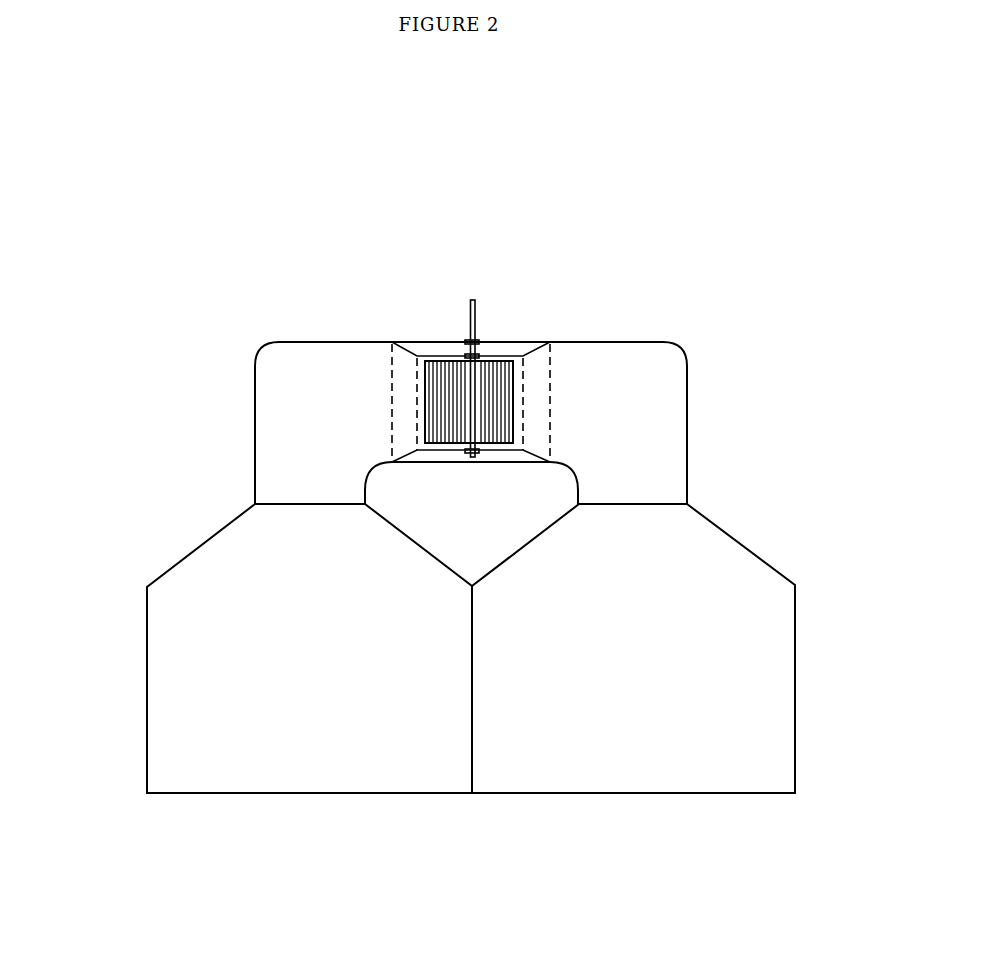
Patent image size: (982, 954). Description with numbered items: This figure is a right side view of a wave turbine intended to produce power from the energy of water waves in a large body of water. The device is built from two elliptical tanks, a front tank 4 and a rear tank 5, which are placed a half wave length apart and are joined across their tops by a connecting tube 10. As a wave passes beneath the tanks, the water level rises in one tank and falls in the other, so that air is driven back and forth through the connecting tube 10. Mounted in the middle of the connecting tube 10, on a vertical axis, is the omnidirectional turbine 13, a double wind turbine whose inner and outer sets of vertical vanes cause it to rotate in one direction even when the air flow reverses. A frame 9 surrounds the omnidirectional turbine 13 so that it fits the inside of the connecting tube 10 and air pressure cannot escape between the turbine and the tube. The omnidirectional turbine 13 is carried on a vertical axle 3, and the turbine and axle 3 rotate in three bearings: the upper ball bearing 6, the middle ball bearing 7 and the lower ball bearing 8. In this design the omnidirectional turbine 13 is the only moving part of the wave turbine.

The axle 3 is at (491, 318).
The front tank 4 is at (133, 690).
The rear tank 5 is at (816, 651).
The upper ball bearing 6 is at (453, 332).
The middle ball bearing 7 is at (495, 352).
The lower ball bearing 8 is at (447, 439).
The frame 9 is at (388, 447).
The connecting tube 10 is at (706, 450).
The omnidirectional turbine 13 is at (516, 402).